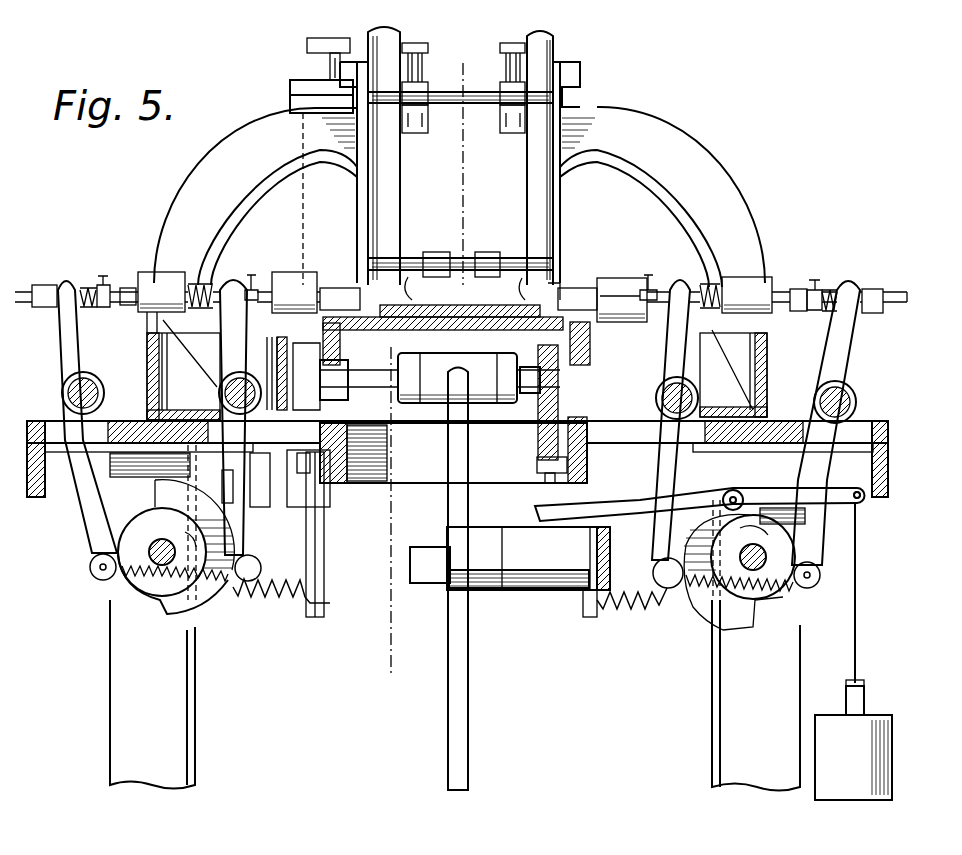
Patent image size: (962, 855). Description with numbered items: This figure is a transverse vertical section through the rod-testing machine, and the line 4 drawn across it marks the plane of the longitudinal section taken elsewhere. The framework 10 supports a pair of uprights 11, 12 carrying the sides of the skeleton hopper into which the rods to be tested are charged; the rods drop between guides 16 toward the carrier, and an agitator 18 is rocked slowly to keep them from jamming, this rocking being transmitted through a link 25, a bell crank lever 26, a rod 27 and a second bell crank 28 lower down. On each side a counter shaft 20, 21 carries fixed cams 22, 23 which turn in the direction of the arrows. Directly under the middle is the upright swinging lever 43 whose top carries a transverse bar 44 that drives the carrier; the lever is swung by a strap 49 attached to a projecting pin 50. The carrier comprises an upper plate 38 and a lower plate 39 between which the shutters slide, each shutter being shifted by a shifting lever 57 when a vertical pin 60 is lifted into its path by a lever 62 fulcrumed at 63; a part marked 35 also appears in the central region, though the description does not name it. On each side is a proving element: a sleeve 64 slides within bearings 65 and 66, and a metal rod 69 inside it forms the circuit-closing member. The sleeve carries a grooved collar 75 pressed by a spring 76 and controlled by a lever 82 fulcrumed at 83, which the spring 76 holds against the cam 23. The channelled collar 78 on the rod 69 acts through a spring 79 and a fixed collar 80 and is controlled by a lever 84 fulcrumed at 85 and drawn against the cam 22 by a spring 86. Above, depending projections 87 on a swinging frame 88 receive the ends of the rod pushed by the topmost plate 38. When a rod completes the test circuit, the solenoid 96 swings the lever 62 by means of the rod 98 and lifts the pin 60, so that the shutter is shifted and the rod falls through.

The section line 4 is at (463, 66).
The framework 10 is at (455, 605).
The upright 11 is at (255, 196).
The upright 12 is at (662, 197).
The guides 16 is at (392, 198).
The agitator 18 is at (421, 125).
The counter shaft 20 is at (173, 561).
The counter shaft 21 is at (788, 582).
The cam 22 is at (167, 613).
The cam 23 is at (166, 492).
The link 25 is at (307, 45).
The bell crank lever 26 is at (318, 113).
The rod 27 is at (305, 216).
The second bell crank 28 is at (330, 528).
The plate 35 is at (427, 318).
The upper plate 38 is at (495, 254).
The lower plate 39 is at (553, 279).
The swinging lever 43 is at (462, 683).
The transverse bar 44 is at (383, 383).
The strap 49 is at (576, 575).
The projecting pin 50 is at (510, 558).
The shifting lever 57 is at (600, 296).
The vertical pin 60 is at (540, 450).
The lever 62 is at (636, 503).
The fulcrum 63 is at (750, 512).
The sleeve 64 is at (338, 288).
The bearing 65 is at (281, 280).
The bearing 66 is at (152, 272).
The metal rod 69 is at (900, 292).
The collar 75 is at (245, 277).
The spring 76 is at (197, 278).
The collar 78 is at (72, 279).
The spring 79 is at (90, 307).
The collar 80 is at (100, 277).
The lever 82 is at (455, 420).
The fulcrum 83 is at (692, 401).
The lever 84 is at (66, 357).
The fulcrum 85 is at (61, 392).
The spring 86 is at (248, 610).
The depending projections 87 is at (408, 277).
The swinging frame 88 is at (436, 254).
The solenoid coil 96 is at (853, 743).
The rod 98 is at (860, 645).